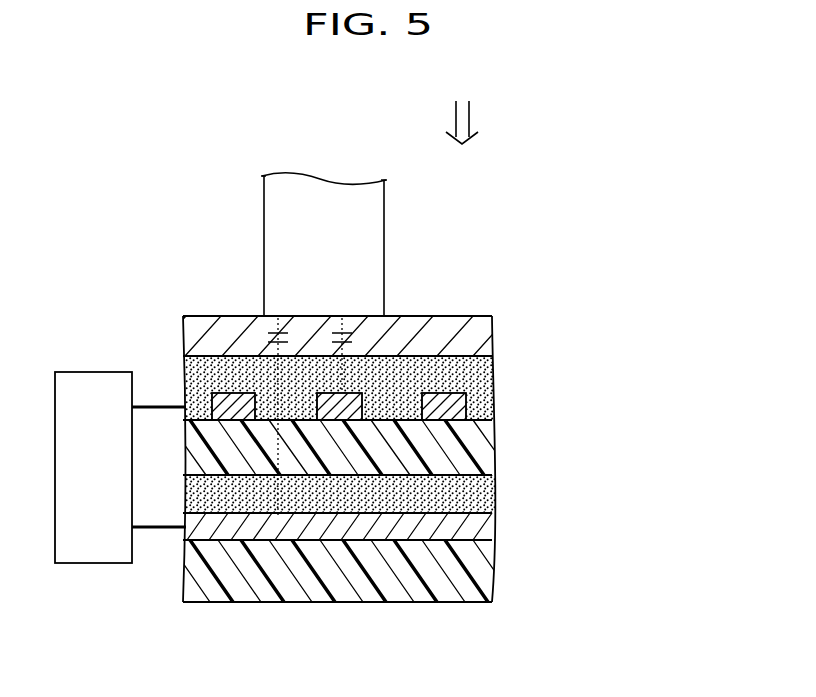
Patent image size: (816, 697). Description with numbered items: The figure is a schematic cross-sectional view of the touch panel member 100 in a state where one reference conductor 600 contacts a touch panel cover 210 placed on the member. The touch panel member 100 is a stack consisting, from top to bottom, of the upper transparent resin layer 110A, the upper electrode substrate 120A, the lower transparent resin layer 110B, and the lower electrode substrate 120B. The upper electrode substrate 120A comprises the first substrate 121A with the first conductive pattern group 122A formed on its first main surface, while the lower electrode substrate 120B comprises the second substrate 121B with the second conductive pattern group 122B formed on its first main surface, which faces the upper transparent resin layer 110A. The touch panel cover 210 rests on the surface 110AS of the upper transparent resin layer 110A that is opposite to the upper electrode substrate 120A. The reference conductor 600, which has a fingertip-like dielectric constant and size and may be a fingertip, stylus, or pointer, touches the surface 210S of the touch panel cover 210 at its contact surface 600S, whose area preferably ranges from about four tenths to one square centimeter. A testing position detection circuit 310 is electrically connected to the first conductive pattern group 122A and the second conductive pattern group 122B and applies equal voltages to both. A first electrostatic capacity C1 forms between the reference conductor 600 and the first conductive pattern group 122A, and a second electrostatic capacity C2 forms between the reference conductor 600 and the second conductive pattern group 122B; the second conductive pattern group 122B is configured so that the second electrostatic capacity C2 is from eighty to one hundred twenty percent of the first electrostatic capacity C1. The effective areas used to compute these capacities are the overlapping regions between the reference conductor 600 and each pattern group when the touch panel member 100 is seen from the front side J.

The touch panel member 100 is at (637, 603).
The first transparent resin layer 110A is at (458, 380).
The surface of upper transparent resin layer 110AS is at (460, 356).
The second transparent resin layer 110B is at (478, 497).
The first electrode substrate 120A is at (570, 389).
The first substrate 121A is at (465, 456).
The first conductive pattern group 122A is at (454, 409).
The second electrode substrate 120B is at (570, 517).
The second substrate 121B is at (467, 568).
The second conductive pattern group 122B is at (470, 531).
The touch panel cover 210 is at (480, 338).
The surface of touch panel cover 210S is at (423, 318).
The testing position detection circuit 310 is at (93, 385).
The reference conductor 600 is at (366, 218).
The contact surface of reference conductor 600S is at (312, 316).
The first electrostatic capacity C1 is at (355, 369).
The second electrostatic capacity C2 is at (291, 417).
The front side J is at (462, 108).